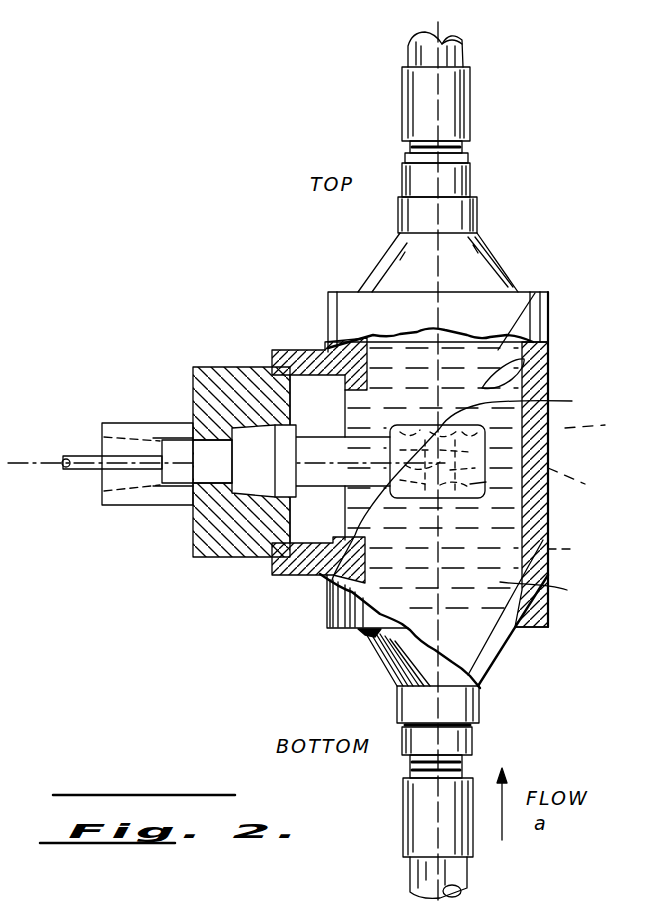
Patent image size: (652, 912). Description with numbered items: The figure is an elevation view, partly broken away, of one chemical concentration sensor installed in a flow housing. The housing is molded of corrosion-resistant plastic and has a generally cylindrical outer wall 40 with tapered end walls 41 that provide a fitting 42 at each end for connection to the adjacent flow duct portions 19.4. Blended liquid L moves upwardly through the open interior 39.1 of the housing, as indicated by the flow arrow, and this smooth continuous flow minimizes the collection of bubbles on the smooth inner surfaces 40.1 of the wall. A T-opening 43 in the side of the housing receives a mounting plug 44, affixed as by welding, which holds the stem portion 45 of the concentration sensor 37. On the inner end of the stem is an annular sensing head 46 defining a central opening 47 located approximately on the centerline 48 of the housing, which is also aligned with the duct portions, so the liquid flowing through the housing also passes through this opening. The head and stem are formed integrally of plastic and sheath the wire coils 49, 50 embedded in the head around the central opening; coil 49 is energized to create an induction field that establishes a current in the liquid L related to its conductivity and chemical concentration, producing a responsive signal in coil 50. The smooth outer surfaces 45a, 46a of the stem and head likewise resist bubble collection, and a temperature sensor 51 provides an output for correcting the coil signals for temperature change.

The flow duct portion 19.4 is at (457, 53).
The fitting 42 is at (463, 181).
The open interior 39.1 is at (538, 295).
The cylindrical outer wall 40 is at (545, 352).
The inner surfaces 40.1 is at (523, 402).
The outer surface of stem 45a is at (322, 457).
The central opening 47 is at (467, 484).
The stem portion 45 is at (178, 455).
The wire coil 49 is at (600, 420).
The sensing head 46 is at (487, 458).
The temperature sensor 51 is at (584, 480).
The concentration sensor 37 is at (487, 482).
The mounting plug 44 is at (196, 527).
The wire coil 50 is at (578, 548).
The T-opening 43 is at (290, 578).
The liquid L is at (546, 590).
The outer surface of head 46a is at (322, 577).
The tapered end wall 41 is at (500, 657).
The centerline 48 is at (438, 700).